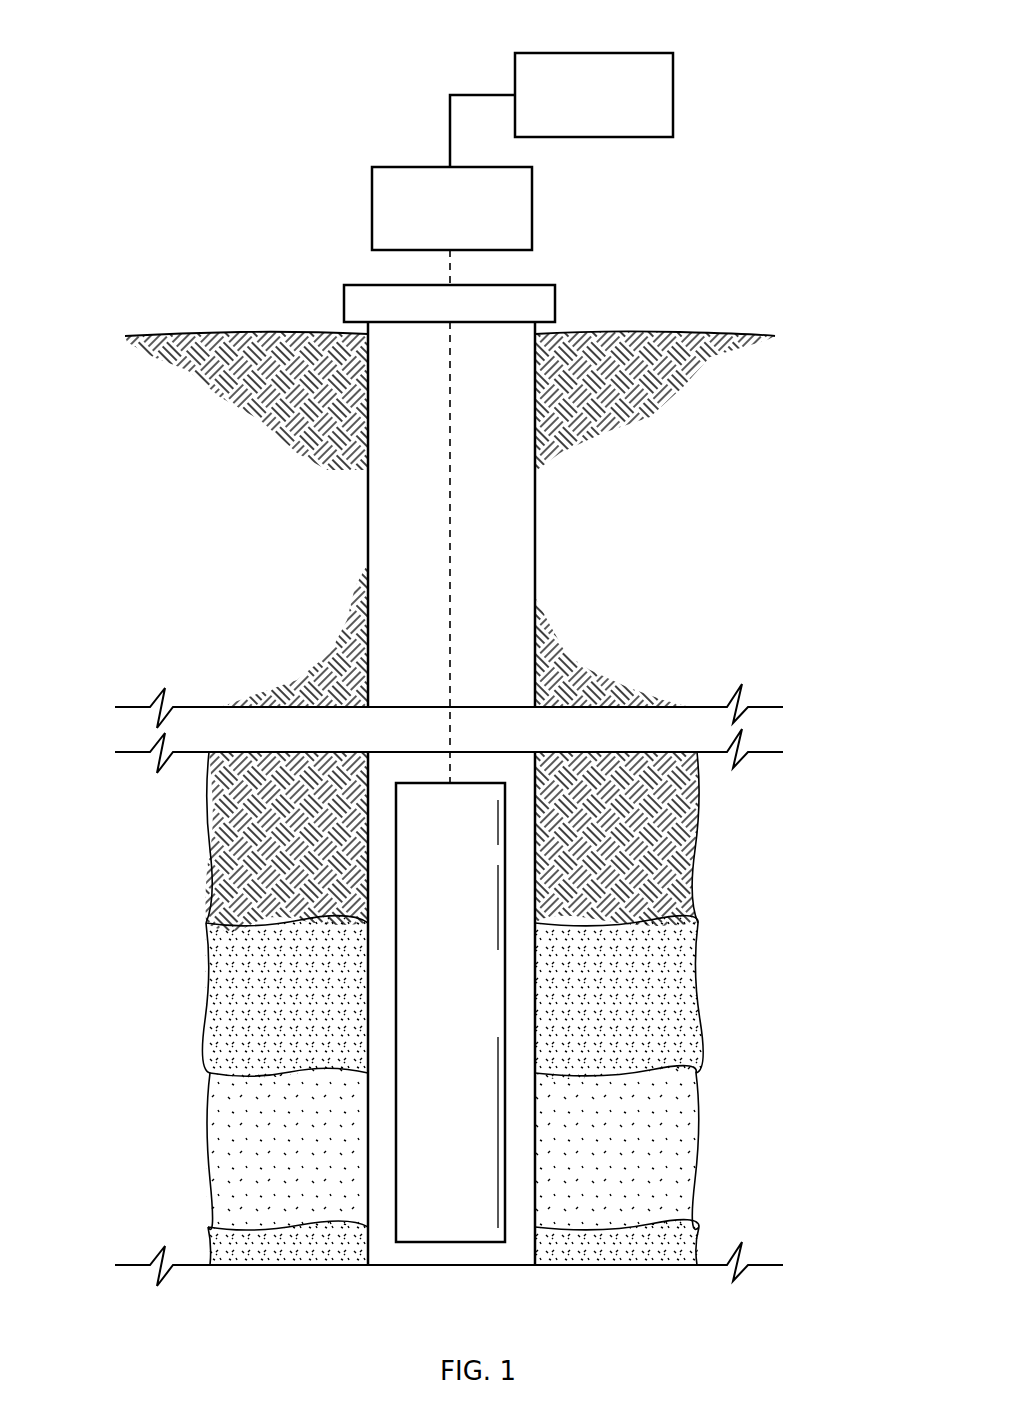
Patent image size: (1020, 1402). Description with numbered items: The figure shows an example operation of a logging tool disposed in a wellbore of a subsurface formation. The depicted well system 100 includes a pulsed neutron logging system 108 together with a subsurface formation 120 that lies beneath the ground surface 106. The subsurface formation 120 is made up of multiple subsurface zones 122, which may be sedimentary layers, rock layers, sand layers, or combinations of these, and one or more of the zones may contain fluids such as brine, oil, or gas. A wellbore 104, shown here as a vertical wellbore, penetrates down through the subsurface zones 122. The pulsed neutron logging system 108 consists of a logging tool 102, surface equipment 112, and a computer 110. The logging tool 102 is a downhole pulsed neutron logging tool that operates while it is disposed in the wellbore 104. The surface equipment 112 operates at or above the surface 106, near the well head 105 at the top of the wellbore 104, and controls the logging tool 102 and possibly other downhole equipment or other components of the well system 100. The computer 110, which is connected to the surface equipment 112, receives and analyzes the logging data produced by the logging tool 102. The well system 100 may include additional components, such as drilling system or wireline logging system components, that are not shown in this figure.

The well system 100 is at (258, 100).
The logging tool 102 is at (472, 1073).
The wellbore 104 is at (367, 537).
The well head 105 is at (343, 305).
The ground surface 106 is at (686, 332).
The pulsed neutron logging system 108 is at (767, 186).
The computer 110 is at (597, 52).
The surface equipment 112 is at (415, 167).
The subsurface formation 120 is at (165, 993).
The subsurface zones 122 is at (700, 847).